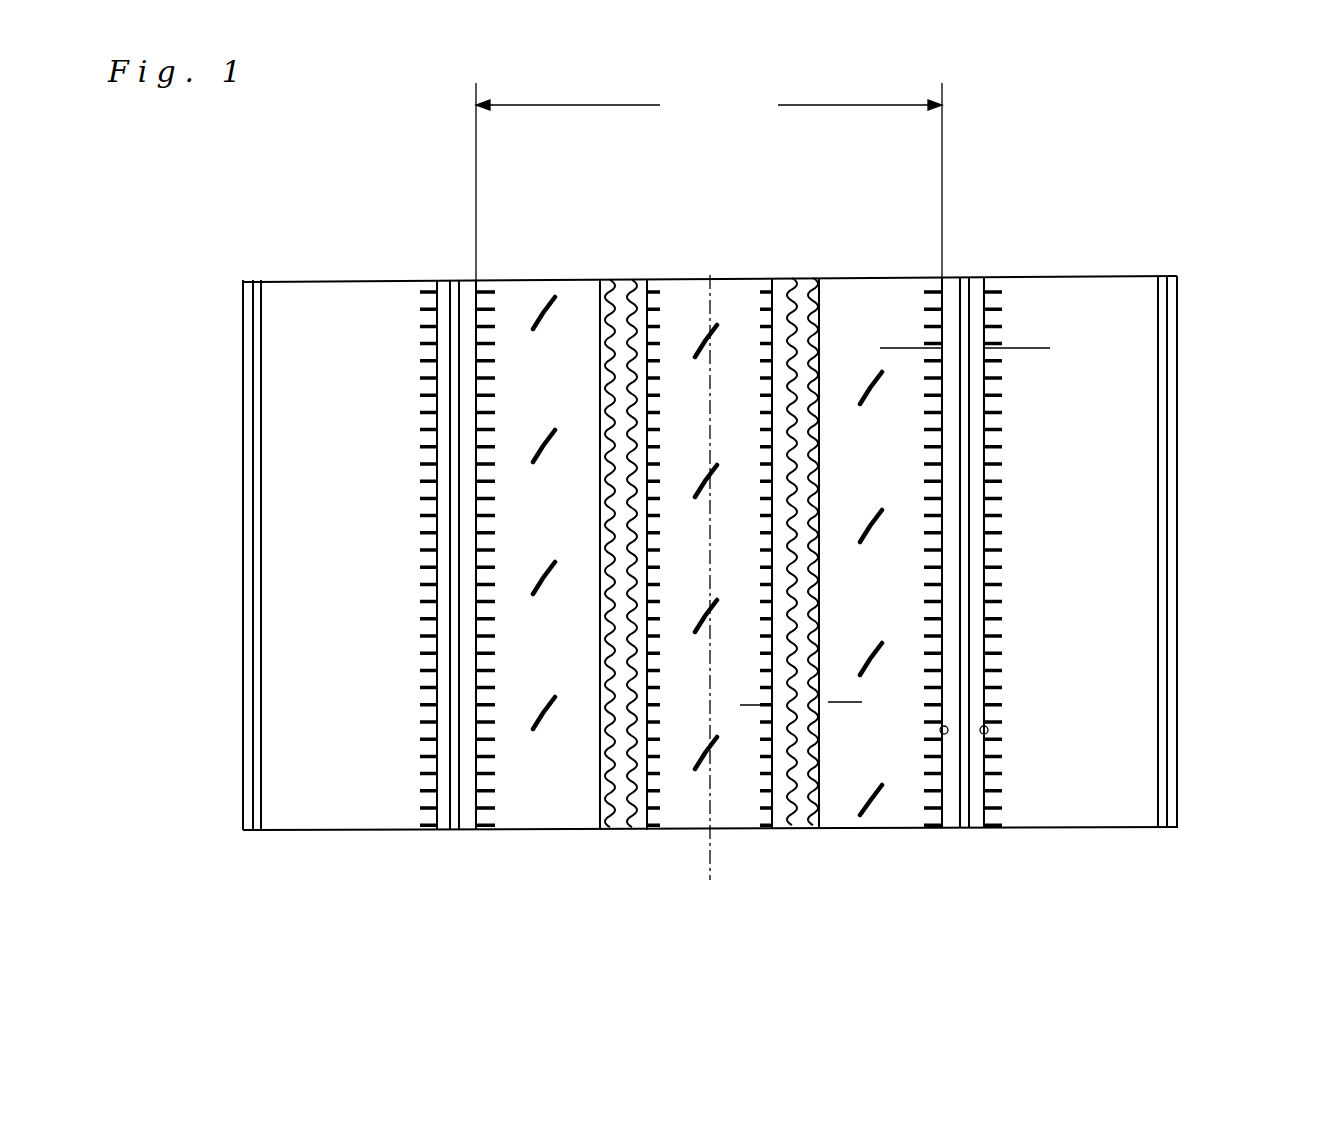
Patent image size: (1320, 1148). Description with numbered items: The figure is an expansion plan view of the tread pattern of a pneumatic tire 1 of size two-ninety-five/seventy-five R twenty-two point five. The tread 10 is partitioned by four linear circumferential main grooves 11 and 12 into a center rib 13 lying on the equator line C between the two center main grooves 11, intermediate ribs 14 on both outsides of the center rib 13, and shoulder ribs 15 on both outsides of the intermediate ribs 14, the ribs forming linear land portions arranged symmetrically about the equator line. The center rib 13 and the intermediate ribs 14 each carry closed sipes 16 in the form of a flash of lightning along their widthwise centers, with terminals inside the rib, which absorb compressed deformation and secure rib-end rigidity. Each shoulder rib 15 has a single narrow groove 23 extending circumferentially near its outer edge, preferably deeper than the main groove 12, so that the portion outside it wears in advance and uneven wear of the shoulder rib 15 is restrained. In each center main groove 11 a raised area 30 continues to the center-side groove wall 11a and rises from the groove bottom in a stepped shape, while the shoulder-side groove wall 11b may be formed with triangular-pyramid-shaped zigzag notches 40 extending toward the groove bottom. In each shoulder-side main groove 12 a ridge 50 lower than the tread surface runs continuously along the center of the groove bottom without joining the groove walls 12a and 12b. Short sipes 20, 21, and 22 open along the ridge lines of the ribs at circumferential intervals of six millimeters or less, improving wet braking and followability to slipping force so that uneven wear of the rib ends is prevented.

The pneumatic tire 1 is at (1004, 205).
The tread 10 is at (340, 312).
The main groove 11 is at (620, 818).
The groove wall 11a is at (645, 793).
The shoulder-side groove wall 11b is at (600, 768).
The main groove 12 is at (448, 830).
The groove wall 12a is at (940, 730).
The groove wall 12b is at (988, 730).
The center rib 13 is at (733, 305).
The intermediate rib 14 is at (570, 350).
The shoulder rib 15 is at (288, 560).
The closed sipe 16 is at (546, 562).
The short sipe 20 is at (762, 577).
The short sipe 21 is at (495, 670).
The short sipe 22 is at (420, 636).
The narrow groove 23 is at (255, 730).
The raised area 30 is at (640, 676).
The zigzag notch 40 is at (605, 383).
The ridge 50 is at (468, 815).